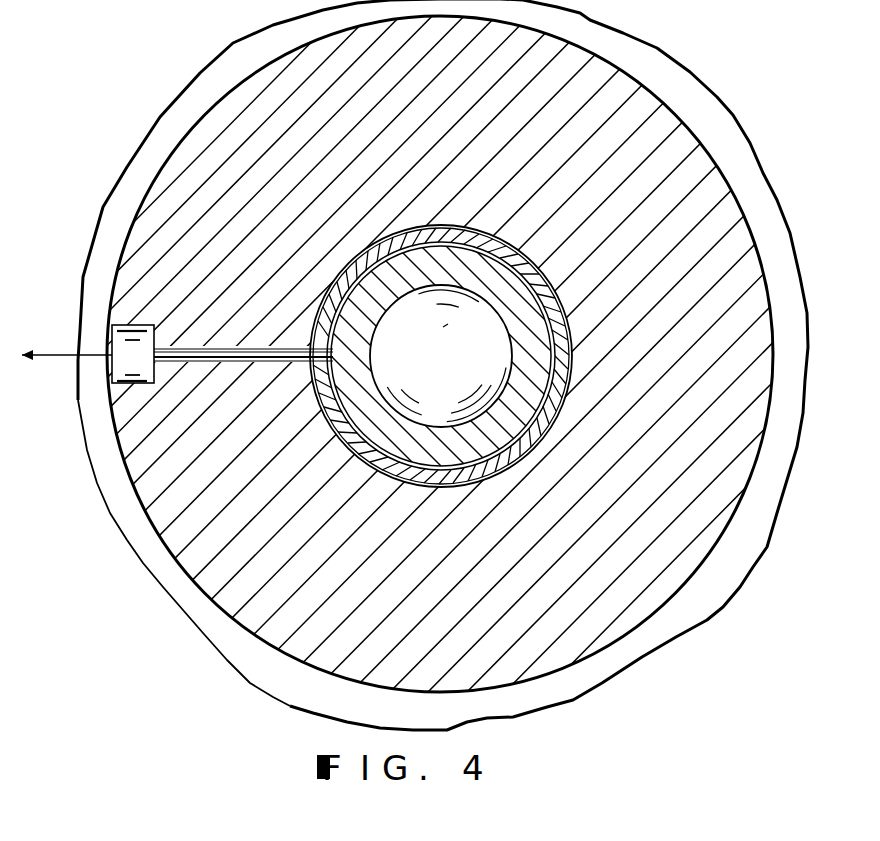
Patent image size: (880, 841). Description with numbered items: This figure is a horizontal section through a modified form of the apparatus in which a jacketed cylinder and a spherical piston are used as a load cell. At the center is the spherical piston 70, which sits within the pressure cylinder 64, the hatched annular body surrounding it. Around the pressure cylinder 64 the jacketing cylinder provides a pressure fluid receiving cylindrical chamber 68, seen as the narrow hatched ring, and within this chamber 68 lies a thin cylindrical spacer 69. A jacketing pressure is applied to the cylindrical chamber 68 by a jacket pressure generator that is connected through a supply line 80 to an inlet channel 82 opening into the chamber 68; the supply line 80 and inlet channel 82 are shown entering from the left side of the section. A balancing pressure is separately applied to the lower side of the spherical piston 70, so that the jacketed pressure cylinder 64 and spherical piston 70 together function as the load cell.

The pressure cylinder 64 is at (520, 398).
The cylindrical chamber 68 is at (564, 327).
The thin cylindrical spacer 69 is at (553, 372).
The spherical piston 70 is at (449, 354).
The supply line 80 is at (62, 362).
The inlet channel 82 is at (215, 362).